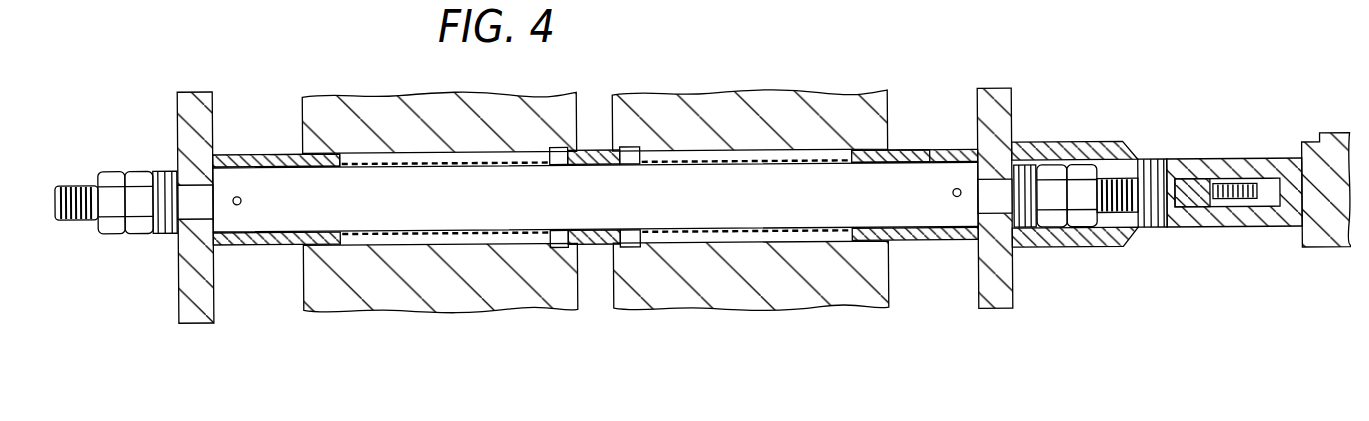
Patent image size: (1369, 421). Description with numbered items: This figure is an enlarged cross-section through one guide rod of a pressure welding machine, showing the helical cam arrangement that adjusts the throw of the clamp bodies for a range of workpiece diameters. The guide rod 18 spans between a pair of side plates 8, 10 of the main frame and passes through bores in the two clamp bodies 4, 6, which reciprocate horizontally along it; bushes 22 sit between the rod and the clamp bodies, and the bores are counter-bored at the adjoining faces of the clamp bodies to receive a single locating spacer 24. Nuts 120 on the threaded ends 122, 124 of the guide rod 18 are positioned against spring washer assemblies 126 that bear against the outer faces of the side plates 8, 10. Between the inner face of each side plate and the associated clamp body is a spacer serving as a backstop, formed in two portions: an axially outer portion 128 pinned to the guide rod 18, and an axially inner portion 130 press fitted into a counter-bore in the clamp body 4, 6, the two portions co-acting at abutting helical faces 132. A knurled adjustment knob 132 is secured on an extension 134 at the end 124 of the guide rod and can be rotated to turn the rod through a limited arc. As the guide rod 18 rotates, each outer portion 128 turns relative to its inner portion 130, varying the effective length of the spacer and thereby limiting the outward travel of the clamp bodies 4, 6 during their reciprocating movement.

The clamp body 4 is at (455, 300).
The clamp body 6 is at (745, 292).
The side plate 8 is at (190, 318).
The side plate 10 is at (993, 295).
The guide rod 18 is at (745, 190).
The bush 22 is at (497, 153).
The locating spacer 24 is at (598, 154).
The nut 120 is at (133, 228).
The threaded end 122 is at (68, 186).
The threaded end 124 is at (1133, 147).
The spring washer assembly 126 is at (163, 172).
The axially outer spacer portion 128 is at (238, 154).
The axially inner spacer portion 130 is at (283, 154).
The knurled adjustment knob 132 is at (280, 250).
The extension 134 is at (1212, 228).